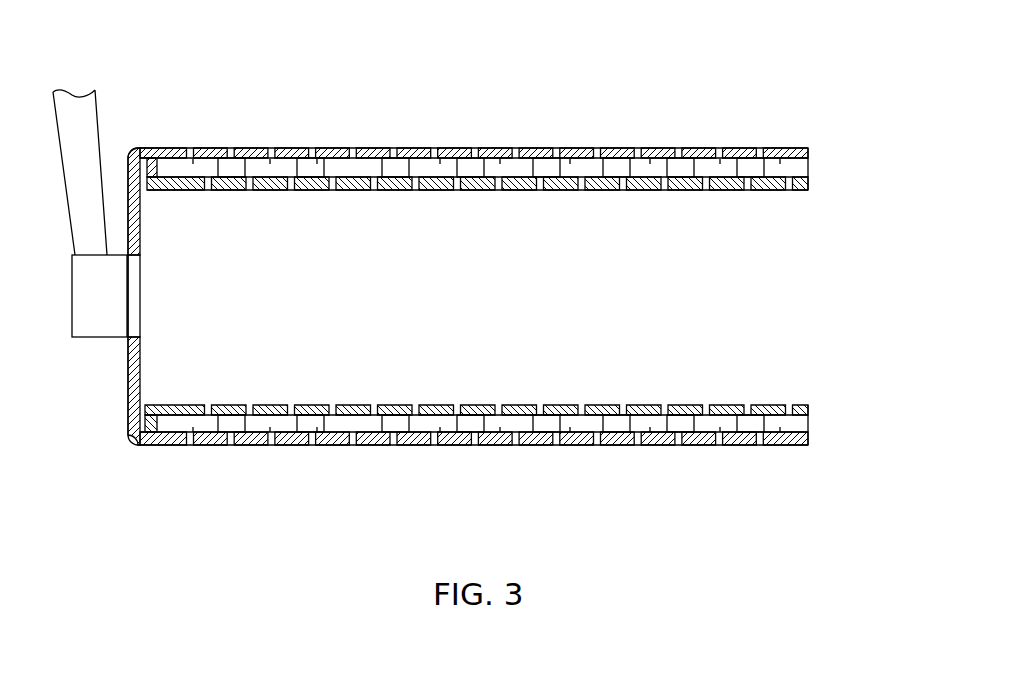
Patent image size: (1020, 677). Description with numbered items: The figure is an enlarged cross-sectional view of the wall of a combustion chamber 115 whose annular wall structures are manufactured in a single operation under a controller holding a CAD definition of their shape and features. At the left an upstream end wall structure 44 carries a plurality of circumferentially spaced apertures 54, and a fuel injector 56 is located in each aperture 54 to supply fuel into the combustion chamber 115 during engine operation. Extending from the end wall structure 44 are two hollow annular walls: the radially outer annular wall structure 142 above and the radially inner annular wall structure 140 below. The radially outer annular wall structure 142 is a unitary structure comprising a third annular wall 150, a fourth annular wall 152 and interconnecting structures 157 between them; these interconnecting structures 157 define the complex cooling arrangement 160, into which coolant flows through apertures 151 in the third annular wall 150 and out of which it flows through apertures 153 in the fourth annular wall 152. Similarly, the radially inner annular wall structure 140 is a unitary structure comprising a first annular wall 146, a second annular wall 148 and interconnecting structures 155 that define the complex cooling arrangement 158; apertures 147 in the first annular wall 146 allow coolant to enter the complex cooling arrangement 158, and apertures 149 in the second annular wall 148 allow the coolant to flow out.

The combustion chamber 115 is at (660, 58).
The upstream end wall structure 44 is at (128, 392).
The aperture 54 is at (133, 257).
The fuel injector 56 is at (83, 297).
The radially outer annular wall structure 142 is at (825, 149).
The radially inner annular wall structure 140 is at (824, 405).
The third annular wall 150 is at (653, 149).
The apertures in the third annular wall 151 is at (276, 149).
The fourth annular wall 152 is at (657, 191).
The apertures in the fourth annular wall 153 is at (368, 191).
The interconnecting structures 157 is at (217, 149).
The complex cooling arrangement 160 is at (268, 168).
The second annular wall 148 is at (663, 405).
The apertures in the second annular wall 149 is at (252, 405).
The first annular wall 146 is at (652, 446).
The complex cooling arrangement 158 is at (410, 405).
The interconnecting structures 155 is at (215, 446).
The apertures in the first annular wall 147 is at (270, 426).